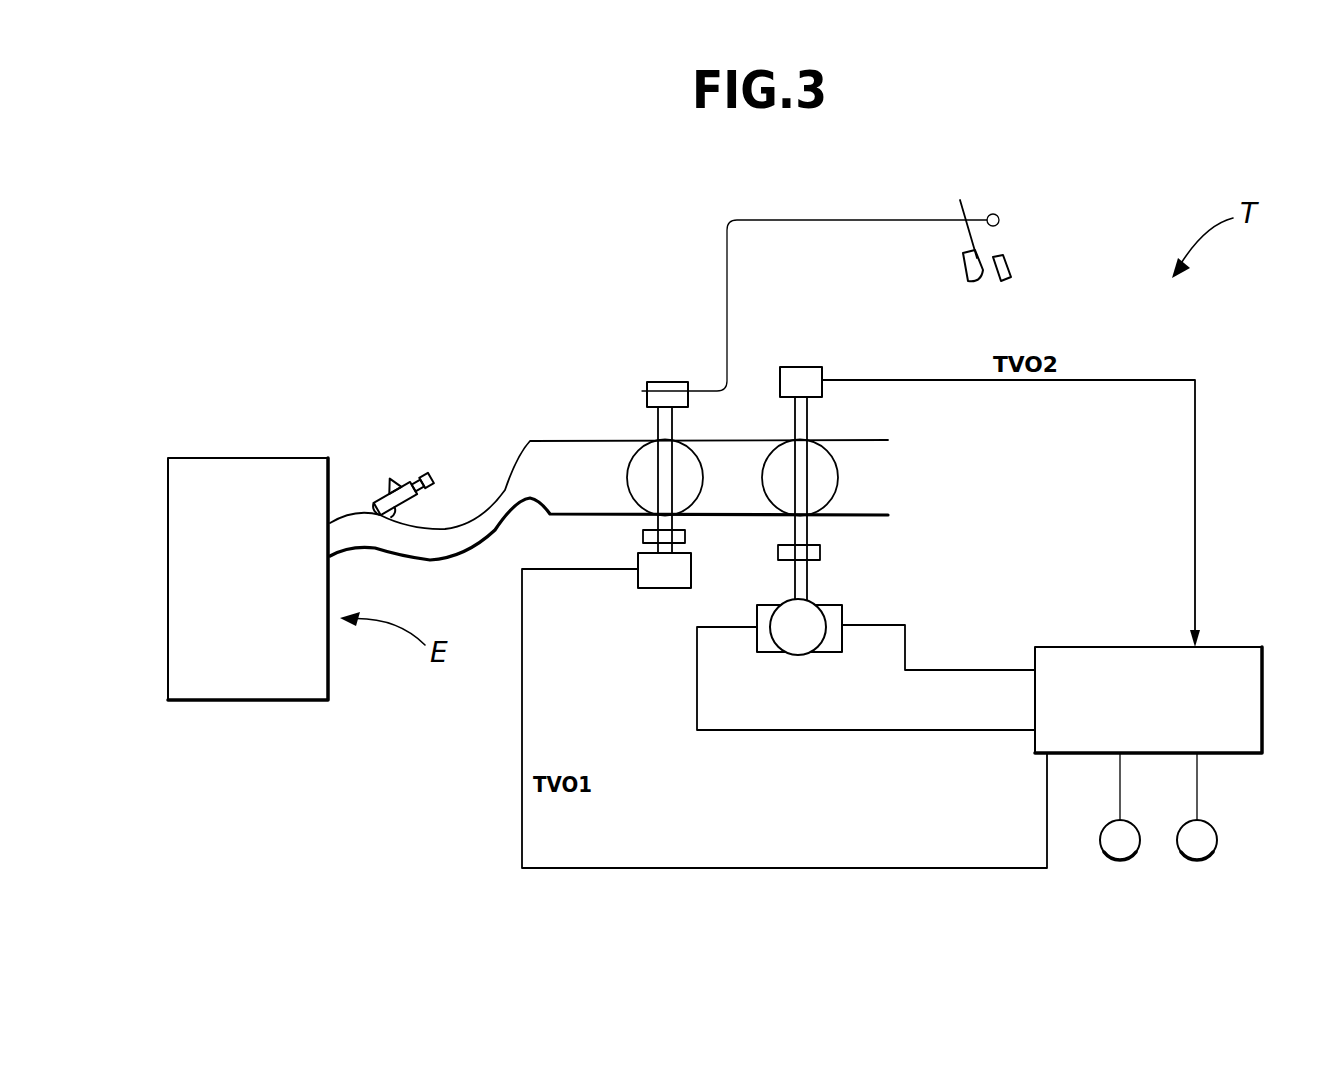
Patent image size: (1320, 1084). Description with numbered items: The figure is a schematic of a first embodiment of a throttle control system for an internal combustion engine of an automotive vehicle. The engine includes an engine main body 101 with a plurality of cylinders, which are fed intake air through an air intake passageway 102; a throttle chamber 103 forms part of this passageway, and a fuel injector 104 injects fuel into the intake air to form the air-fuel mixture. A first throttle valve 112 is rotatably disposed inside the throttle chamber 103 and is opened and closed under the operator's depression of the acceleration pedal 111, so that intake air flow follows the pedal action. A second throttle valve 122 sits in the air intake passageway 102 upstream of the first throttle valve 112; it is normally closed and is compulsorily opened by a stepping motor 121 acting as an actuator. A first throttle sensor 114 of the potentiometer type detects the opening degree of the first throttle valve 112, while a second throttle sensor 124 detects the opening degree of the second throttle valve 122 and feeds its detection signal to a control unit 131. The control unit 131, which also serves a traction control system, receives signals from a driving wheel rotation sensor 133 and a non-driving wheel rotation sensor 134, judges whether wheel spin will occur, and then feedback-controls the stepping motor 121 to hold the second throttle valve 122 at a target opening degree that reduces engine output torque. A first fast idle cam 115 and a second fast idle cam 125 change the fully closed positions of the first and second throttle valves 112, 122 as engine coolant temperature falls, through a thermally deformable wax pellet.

The engine main body 101 is at (255, 458).
The air intake passageway 102 is at (727, 440).
The throttle chamber 103 is at (568, 440).
The fuel injector 104 is at (385, 490).
The acceleration pedal 111 is at (1012, 262).
The first throttle valve 112 is at (685, 497).
The first throttle sensor 114 is at (645, 590).
The first fast idle cam 115 is at (643, 538).
The stepping motor 121 is at (813, 653).
The second throttle valve 122 is at (827, 485).
The second throttle sensor 124 is at (803, 367).
The second fast idle cam 125 is at (822, 556).
The control unit 131 is at (1237, 650).
The driving wheel rotation sensor 133 is at (1123, 852).
The non-driving wheel rotation sensor 134 is at (1200, 852).